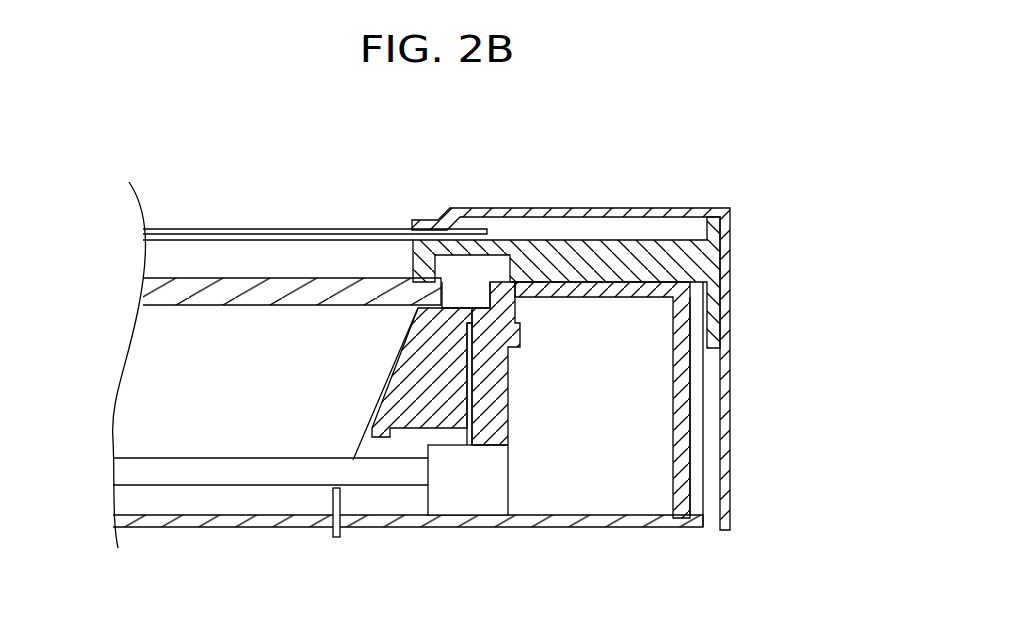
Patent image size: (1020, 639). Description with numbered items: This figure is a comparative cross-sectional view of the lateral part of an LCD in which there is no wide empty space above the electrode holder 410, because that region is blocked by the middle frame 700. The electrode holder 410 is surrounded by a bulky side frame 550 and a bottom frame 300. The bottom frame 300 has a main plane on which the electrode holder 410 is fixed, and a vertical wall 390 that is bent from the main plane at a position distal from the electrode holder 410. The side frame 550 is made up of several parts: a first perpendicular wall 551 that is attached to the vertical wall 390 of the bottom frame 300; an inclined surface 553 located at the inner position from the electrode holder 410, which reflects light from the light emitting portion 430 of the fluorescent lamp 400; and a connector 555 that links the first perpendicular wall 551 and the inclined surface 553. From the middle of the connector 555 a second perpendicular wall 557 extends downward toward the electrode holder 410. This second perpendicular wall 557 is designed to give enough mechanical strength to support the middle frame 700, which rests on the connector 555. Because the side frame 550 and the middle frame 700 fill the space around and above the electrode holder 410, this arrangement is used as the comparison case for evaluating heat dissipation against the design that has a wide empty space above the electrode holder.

The bottom frame 300 is at (512, 518).
The vertical wall 390 is at (699, 489).
The fluorescent lamp 400 is at (200, 453).
The electrode holder 410 is at (467, 502).
The light emitting portion 430 is at (197, 480).
The side frame 550 is at (402, 372).
The first perpendicular wall 551 is at (687, 447).
The inclined surface 553 is at (351, 458).
The connector 555 is at (468, 323).
The second perpendicular wall 557 is at (502, 422).
The middle frame 700 is at (708, 262).